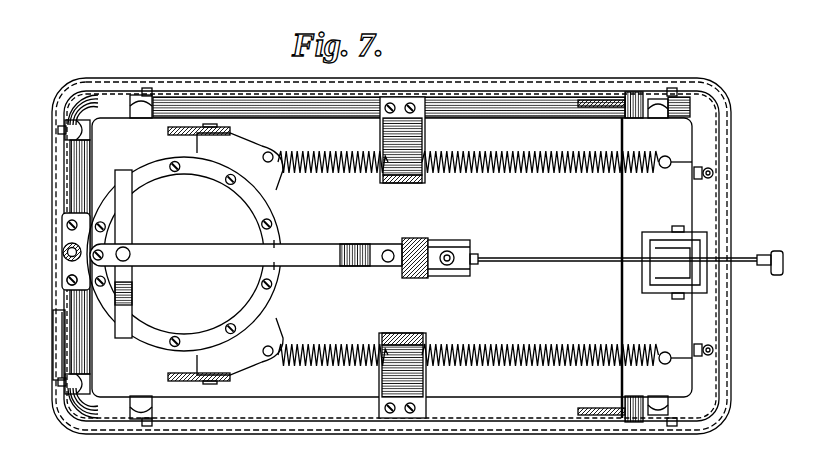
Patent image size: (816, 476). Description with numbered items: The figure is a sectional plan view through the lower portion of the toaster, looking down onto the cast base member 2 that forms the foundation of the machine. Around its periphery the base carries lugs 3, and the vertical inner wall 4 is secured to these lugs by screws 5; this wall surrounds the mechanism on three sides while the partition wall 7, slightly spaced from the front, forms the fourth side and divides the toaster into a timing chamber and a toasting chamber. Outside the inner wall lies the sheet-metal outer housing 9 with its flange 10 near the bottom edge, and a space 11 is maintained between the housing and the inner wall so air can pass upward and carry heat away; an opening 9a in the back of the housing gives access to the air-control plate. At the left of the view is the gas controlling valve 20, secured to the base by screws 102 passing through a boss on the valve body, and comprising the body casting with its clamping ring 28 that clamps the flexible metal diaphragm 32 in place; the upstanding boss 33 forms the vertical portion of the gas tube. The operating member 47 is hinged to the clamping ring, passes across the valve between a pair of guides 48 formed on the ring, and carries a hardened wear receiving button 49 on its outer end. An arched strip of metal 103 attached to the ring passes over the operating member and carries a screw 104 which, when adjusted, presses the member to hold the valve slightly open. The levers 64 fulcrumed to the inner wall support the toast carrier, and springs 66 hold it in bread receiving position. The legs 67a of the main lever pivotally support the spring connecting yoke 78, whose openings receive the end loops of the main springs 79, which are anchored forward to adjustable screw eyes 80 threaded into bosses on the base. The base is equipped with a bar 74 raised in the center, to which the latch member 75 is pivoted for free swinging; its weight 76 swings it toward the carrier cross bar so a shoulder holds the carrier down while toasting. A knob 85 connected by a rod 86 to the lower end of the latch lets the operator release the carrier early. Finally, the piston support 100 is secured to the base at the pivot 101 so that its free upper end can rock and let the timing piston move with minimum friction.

The base member 2 is at (512, 114).
The lugs 3 is at (84, 128).
The vertical inner wall 4 is at (192, 97).
The screws 5 is at (149, 88).
The partition wall 7 is at (625, 240).
The outer housing 9 is at (55, 312).
The opening 9a is at (62, 212).
The flange 10 is at (58, 330).
The space 11 is at (718, 96).
The gas controlling valve 20 is at (218, 224).
The clamping ring 28 is at (260, 212).
The flexible metal diaphragm 32 is at (232, 296).
The upstanding boss 33 is at (63, 250).
The operating member 47 is at (310, 250).
The guides 48 is at (274, 243).
The wear receiving button 49 is at (388, 250).
The levers 64 is at (610, 108).
The springs 66 is at (714, 172).
The legs 67a is at (178, 136).
The bar 74 is at (418, 181).
The latch member 75 is at (412, 279).
The weight 76 is at (445, 242).
The spring connecting yoke 78 is at (266, 321).
The main springs 79 is at (502, 175).
The screw eyes 80 is at (671, 167).
The knob 85 is at (778, 253).
The rod 86 is at (584, 262).
The piston support 100 is at (650, 232).
The pivot 101 is at (670, 294).
The screws 102 is at (63, 277).
The strip of metal 103 is at (129, 230).
The screw 104 is at (131, 263).